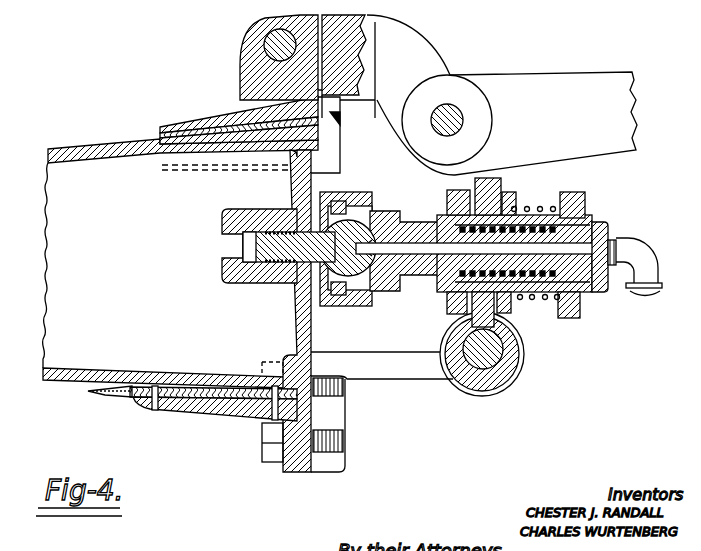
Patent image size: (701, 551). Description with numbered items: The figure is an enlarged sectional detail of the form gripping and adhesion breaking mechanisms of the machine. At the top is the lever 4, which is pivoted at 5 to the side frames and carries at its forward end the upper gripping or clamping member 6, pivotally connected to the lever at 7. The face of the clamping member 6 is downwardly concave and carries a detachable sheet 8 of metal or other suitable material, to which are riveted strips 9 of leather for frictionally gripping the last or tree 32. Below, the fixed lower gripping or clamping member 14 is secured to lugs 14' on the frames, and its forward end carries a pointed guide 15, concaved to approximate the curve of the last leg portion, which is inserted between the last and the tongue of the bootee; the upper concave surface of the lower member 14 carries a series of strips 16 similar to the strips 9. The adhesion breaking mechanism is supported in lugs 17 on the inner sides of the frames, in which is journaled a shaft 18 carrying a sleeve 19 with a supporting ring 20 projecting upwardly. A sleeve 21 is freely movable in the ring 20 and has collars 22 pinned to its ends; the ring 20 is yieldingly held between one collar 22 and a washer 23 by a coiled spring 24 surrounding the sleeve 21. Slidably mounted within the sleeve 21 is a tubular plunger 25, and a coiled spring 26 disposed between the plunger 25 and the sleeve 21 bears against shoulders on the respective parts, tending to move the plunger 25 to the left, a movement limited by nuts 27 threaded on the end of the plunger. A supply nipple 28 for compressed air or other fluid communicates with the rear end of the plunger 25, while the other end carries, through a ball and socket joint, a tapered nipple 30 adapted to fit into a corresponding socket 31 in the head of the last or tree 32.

The lever 4 is at (534, 80).
The pivot 5 is at (450, 108).
The gripping or clamping member 6 is at (222, 108).
The pivotal connection 7 is at (268, 50).
The detachable sheet 8 is at (332, 122).
The strips 9 is at (160, 136).
The fixed lower gripping or clamping member 14 is at (215, 424).
The lugs 14' is at (357, 311).
The pointed guide 15 is at (110, 393).
The strips 16 is at (192, 385).
The lugs 17 is at (480, 386).
The shaft 18 is at (500, 349).
The sleeve 19 is at (503, 370).
The supporting ring 20 is at (503, 195).
The sleeve 21 is at (440, 218).
The collars 22 is at (455, 200).
The washer 23 is at (510, 206).
The coiled spring 24 is at (542, 210).
The tubular plunger 25 is at (423, 272).
The coiled spring 26 is at (537, 285).
The nuts 27 is at (585, 295).
The supply nipple 28 is at (648, 270).
The tapered nipple 30 is at (262, 263).
The socket 31 is at (255, 228).
The last or tree 32 is at (72, 155).